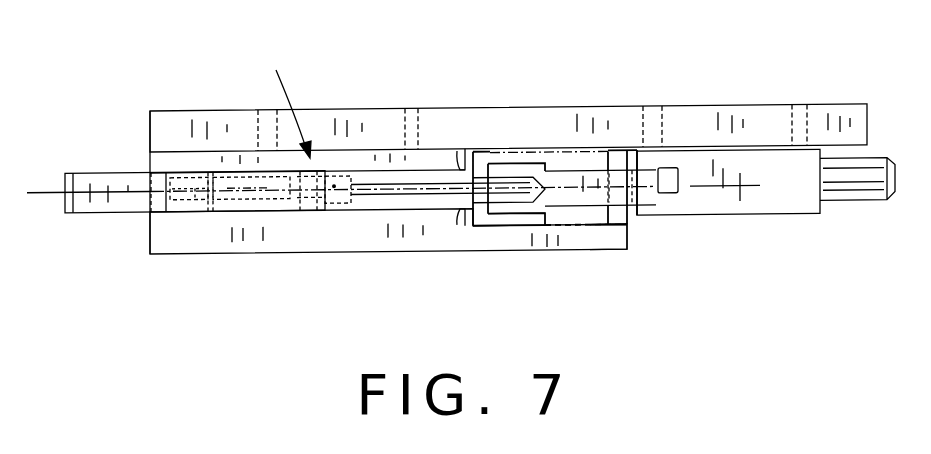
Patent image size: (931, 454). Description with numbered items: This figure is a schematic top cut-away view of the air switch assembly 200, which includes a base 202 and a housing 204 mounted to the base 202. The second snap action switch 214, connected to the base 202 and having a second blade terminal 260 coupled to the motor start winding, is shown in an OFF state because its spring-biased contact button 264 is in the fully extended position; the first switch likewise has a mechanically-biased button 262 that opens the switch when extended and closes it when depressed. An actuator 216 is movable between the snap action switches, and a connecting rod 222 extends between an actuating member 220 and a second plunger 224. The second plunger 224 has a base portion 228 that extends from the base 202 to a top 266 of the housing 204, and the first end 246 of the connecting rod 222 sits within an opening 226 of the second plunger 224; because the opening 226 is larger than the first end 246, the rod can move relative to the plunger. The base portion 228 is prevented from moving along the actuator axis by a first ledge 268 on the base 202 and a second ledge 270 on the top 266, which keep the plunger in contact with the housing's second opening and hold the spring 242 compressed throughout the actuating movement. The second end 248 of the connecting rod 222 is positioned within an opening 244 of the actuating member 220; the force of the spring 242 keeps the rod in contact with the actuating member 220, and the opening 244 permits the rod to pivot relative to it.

The air switch assembly 200 is at (543, 88).
The base 202 is at (462, 124).
The housing 204 is at (148, 233).
The second snap action switch 214 is at (743, 216).
The actuator 216 is at (282, 102).
The actuating member 220 is at (333, 210).
The connecting rod 222 is at (393, 186).
The second plunger 224 is at (560, 183).
The opening 226 is at (462, 210).
The base portion 228 is at (481, 221).
The spring 242 is at (578, 228).
The opening 244 is at (317, 198).
The first end 246 is at (478, 151).
The second end 248 is at (322, 172).
The second blade terminal 260 is at (677, 169).
The first switch button 262 is at (612, 238).
The second switch button 264 is at (432, 160).
The top 266 is at (412, 208).
The first ledge 268 is at (464, 150).
The second ledge 270 is at (458, 222).